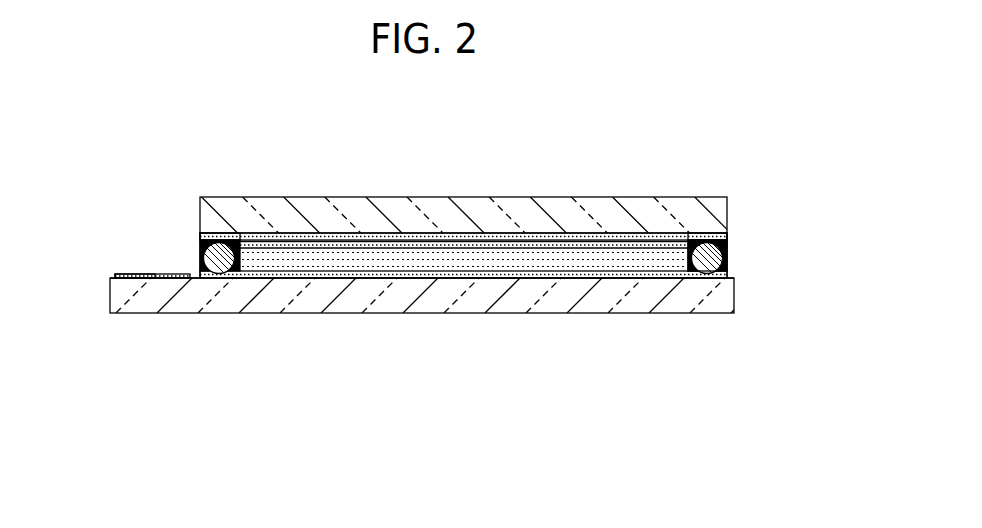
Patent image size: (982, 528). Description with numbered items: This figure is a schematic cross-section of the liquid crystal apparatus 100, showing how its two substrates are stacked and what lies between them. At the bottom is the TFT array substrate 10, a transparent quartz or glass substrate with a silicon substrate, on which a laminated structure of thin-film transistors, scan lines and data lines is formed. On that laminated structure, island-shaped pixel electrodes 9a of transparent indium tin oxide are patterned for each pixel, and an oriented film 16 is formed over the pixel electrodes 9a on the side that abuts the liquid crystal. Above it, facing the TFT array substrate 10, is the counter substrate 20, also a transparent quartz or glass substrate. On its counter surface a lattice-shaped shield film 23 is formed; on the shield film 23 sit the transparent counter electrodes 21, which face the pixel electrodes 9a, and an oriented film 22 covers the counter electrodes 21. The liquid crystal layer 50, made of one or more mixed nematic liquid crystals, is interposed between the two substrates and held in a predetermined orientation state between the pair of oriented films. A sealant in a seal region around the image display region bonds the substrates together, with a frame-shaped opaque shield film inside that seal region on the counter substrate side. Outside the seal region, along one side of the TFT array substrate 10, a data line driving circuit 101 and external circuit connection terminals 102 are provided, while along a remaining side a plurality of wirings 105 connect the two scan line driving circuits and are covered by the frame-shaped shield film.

The liquid crystal apparatus 100 is at (700, 80).
The TFT array substrate 10 is at (520, 302).
The pixel electrodes 9a is at (305, 278).
The oriented film 16 is at (616, 268).
The counter substrate 20 is at (392, 203).
The counter electrodes 21 is at (608, 240).
The oriented film 22 is at (560, 240).
The shield film 23 is at (483, 233).
The liquid crystal layer 50 is at (462, 262).
The data line driving circuit 101 is at (160, 275).
The external circuit connection terminals 102 is at (133, 275).
The wirings 105 is at (695, 277).